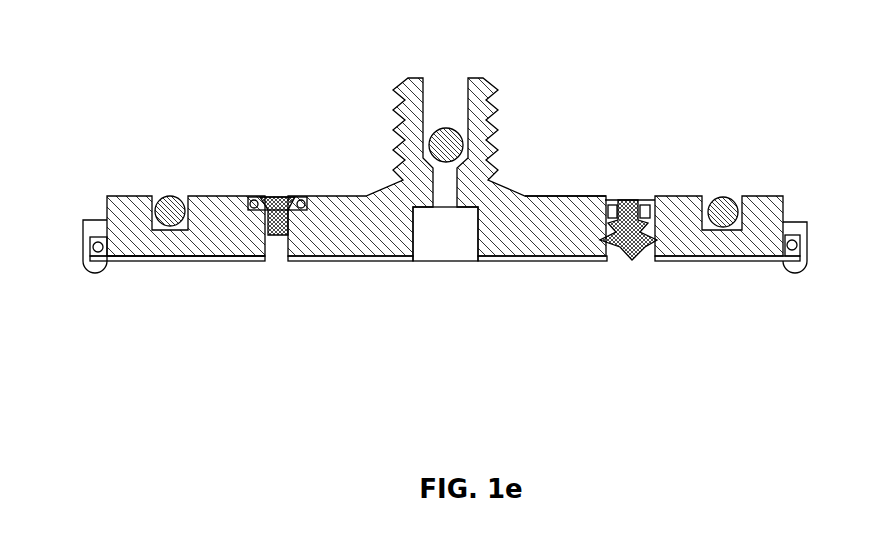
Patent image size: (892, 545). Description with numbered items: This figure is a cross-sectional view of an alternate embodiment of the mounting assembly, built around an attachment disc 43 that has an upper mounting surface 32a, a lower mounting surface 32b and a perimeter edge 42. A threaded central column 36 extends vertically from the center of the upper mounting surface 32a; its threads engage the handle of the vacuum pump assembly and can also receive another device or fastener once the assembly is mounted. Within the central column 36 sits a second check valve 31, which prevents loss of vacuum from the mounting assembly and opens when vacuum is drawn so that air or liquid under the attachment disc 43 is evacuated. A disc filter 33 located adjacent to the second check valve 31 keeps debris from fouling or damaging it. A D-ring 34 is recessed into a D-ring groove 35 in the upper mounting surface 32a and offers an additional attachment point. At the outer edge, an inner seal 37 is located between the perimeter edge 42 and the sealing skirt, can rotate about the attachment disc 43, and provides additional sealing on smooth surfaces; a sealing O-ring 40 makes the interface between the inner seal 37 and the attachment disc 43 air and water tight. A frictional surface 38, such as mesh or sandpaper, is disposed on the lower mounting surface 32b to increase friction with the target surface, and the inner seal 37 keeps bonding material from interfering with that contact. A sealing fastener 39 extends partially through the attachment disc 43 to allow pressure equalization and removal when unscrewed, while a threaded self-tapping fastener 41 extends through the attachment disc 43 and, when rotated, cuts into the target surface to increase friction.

The second check valve 31 is at (448, 95).
The upper mounting surface 32a is at (203, 197).
The lower mounting surface 32b is at (203, 260).
The disc filter 33 is at (450, 260).
The D-ring 34 is at (160, 198).
The D-ring groove 35 is at (130, 257).
The central column 36 is at (498, 130).
The inner seal 37 is at (87, 220).
The frictional surface 38 is at (543, 260).
The sealing fastener 39 is at (282, 197).
The sealing O-ring 40 is at (87, 263).
The self-tapping fastener 41 is at (627, 198).
The perimeter edge 42 is at (785, 203).
The attachment disc 43 is at (540, 198).